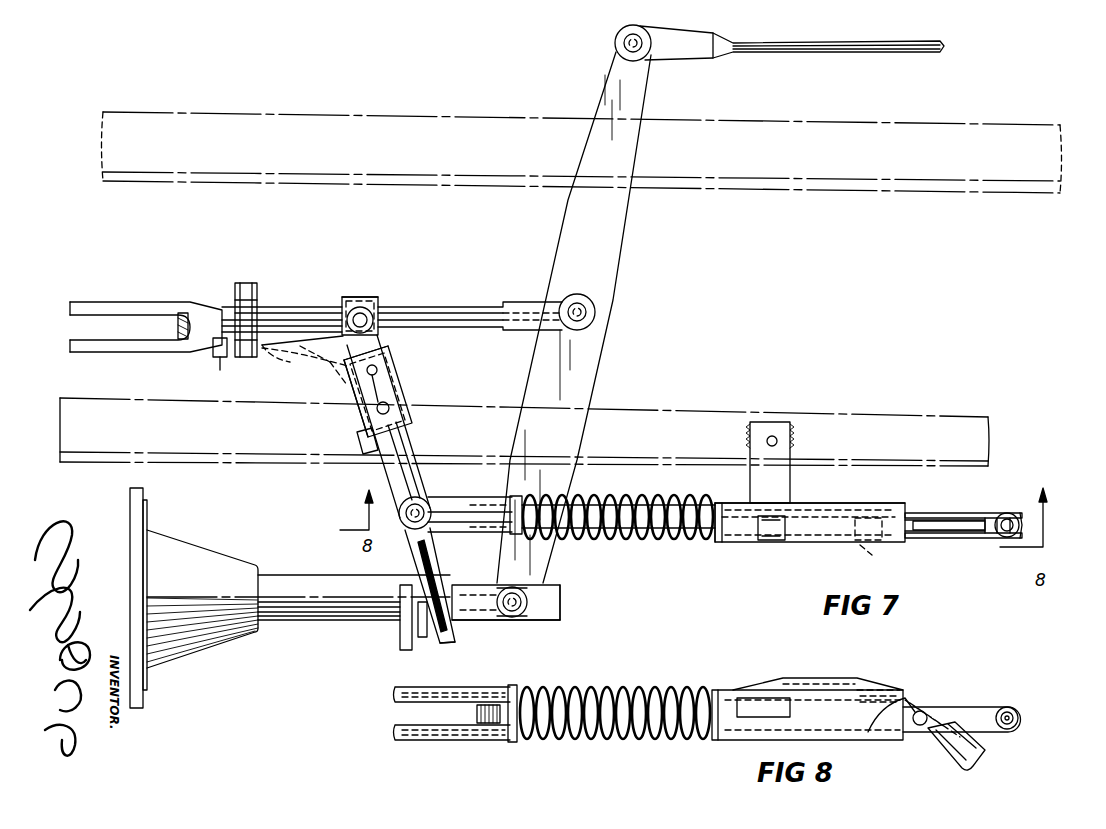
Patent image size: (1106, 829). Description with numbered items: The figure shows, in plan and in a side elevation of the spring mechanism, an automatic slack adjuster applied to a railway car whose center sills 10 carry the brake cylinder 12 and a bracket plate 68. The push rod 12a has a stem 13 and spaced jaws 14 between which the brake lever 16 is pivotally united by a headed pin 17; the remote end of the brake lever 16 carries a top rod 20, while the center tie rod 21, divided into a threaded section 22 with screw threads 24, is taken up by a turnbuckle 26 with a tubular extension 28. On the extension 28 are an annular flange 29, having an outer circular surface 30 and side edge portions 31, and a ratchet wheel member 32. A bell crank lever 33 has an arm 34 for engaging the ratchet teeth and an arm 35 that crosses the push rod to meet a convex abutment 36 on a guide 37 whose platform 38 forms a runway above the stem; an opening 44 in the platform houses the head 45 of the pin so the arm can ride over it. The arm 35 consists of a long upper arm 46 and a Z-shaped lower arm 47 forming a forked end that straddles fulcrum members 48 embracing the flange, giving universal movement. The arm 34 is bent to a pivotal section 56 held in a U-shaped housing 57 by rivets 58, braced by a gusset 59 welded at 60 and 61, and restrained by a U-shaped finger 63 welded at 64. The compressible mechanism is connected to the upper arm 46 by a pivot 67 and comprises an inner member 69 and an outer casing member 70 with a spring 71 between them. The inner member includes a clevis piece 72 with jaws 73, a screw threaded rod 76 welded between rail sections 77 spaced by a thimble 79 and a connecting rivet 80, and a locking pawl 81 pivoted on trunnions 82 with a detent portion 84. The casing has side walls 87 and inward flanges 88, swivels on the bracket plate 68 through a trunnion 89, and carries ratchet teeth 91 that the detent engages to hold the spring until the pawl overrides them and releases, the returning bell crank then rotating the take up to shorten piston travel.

In FIG. 7, the center sills 10 is at (488, 117).
In FIG. 7, the brake cylinder 12 is at (148, 520).
In FIG. 7, the push rod 12a is at (406, 628).
In FIG. 7, the stem 13 is at (470, 618).
In FIG. 7, the jaws 14 is at (546, 590).
In FIG. 7, the brake lever 16 is at (612, 290).
In FIG. 7, the headed pin 17 is at (515, 618).
In FIG. 7, the top rod 20 is at (745, 59).
In FIG. 7, the center tie rod 21 is at (596, 312).
In FIG. 7, the section 22 is at (432, 308).
In FIG. 7, the screw threads 24 is at (182, 340).
In FIG. 7, the turnbuckle 26 is at (170, 302).
In FIG. 7, the tubular extension 28 is at (300, 308).
In FIG. 7, the annular flange 29 is at (361, 297).
In FIG. 7, the outer circular surface 30 is at (390, 358).
In FIG. 7, the side edge portions 31 is at (372, 313).
In FIG. 7, the ratchet wheel member 32 is at (256, 295).
In FIG. 7, the bell crank lever 33 is at (400, 380).
In FIG. 7, the arm 34 is at (221, 360).
In FIG. 7, the arm 35 is at (428, 450).
In FIG. 7, the abutment 36 is at (432, 635).
In FIG. 7, the guide 37 is at (560, 624).
In FIG. 7, the platform 38 is at (555, 609).
In FIG. 7, the opening 44 is at (522, 612).
In FIG. 7, the head 45 is at (500, 586).
In FIG. 7, the upper arm 46 is at (449, 640).
In FIG. 7, the lower arm 47 is at (393, 404).
In FIG. 7, the fulcrum members 48 is at (380, 298).
In FIG. 7, the pivotal section 56 is at (345, 386).
In FIG. 7, the U-shaped housing 57 is at (356, 418).
In FIG. 7, the rivets 58 is at (374, 378).
In FIG. 7, the gusset 59 is at (303, 358).
In FIG. 7, the weld 60 is at (280, 354).
In FIG. 7, the weld 61 is at (332, 362).
In FIG. 7, the U-shaped finger 63 is at (363, 450).
In FIG. 7, the weld 64 is at (405, 434).
In FIG. 7, the pivot 67 is at (398, 514).
In FIG. 7, the bracket plate 68 is at (795, 504).
In FIG. 8, the bracket plate 68 is at (730, 690).
In FIG. 7, the inner member 69 is at (512, 496).
In FIG. 8, the inner member 69 is at (512, 744).
In FIG. 7, the outer casing member 70 is at (820, 546).
In FIG. 8, the outer casing member 70 is at (715, 742).
In FIG. 7, the spring 71 is at (640, 545).
In FIG. 8, the spring 71 is at (640, 692).
In FIG. 8, the clevis piece 72 is at (446, 738).
In FIG. 8, the jaws 73 is at (395, 700).
In FIG. 7, the screw threaded rod 76 is at (478, 505).
In FIG. 8, the screw threaded rod 76 is at (487, 725).
In FIG. 7, the rail sections 77 is at (982, 513).
In FIG. 8, the rail sections 77 is at (890, 734).
In FIG. 7, the thimble 79 is at (1024, 527).
In FIG. 7, the connecting rivet 80 is at (1012, 513).
In FIG. 8, the connecting rivet 80 is at (1005, 708).
In FIG. 7, the locking pawl 81 is at (962, 531).
In FIG. 8, the locking pawl 81 is at (958, 766).
In FIG. 7, the trunnions 82 is at (925, 513).
In FIG. 8, the trunnions 82 is at (916, 726).
In FIG. 8, the detent portion 84 is at (912, 706).
In FIG. 7, the side walls 87 is at (722, 545).
In FIG. 7, the flange 88 is at (850, 504).
In FIG. 7, the trunnion 89 is at (755, 548).
In FIG. 7, the ratchet teeth 91 is at (870, 550).
In FIG. 8, the ratchet teeth 91 is at (882, 680).